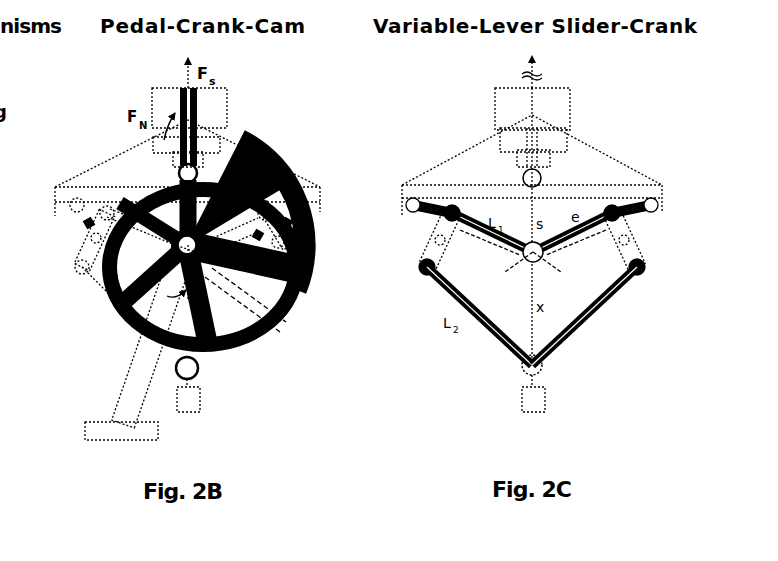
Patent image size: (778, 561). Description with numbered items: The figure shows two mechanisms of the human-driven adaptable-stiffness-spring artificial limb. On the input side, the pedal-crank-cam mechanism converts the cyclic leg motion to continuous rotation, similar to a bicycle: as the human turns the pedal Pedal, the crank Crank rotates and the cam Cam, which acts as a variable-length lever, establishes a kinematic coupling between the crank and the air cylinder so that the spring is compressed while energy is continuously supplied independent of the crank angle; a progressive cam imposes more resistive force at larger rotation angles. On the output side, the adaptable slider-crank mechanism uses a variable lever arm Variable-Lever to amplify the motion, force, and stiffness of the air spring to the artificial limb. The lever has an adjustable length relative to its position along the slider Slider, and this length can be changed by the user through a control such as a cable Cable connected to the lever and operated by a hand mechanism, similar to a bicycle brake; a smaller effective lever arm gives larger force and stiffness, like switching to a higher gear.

In FIG. 2B, the cam Cam is at (224, 237).
In FIG. 2B, the crank Crank is at (118, 324).
In FIG. 2C, the crank Crank is at (595, 339).
In FIG. 2B, the pedal Pedal is at (81, 434).
In FIG. 2B, the cable Cable is at (187, 168).
In FIG. 2C, the cable Cable is at (621, 151).
In FIG. 2B, the slider Slider is at (181, 256).
In FIG. 2C, the slider Slider is at (642, 246).
In FIG. 2C, the variable lever arm Variable-Lever is at (594, 206).